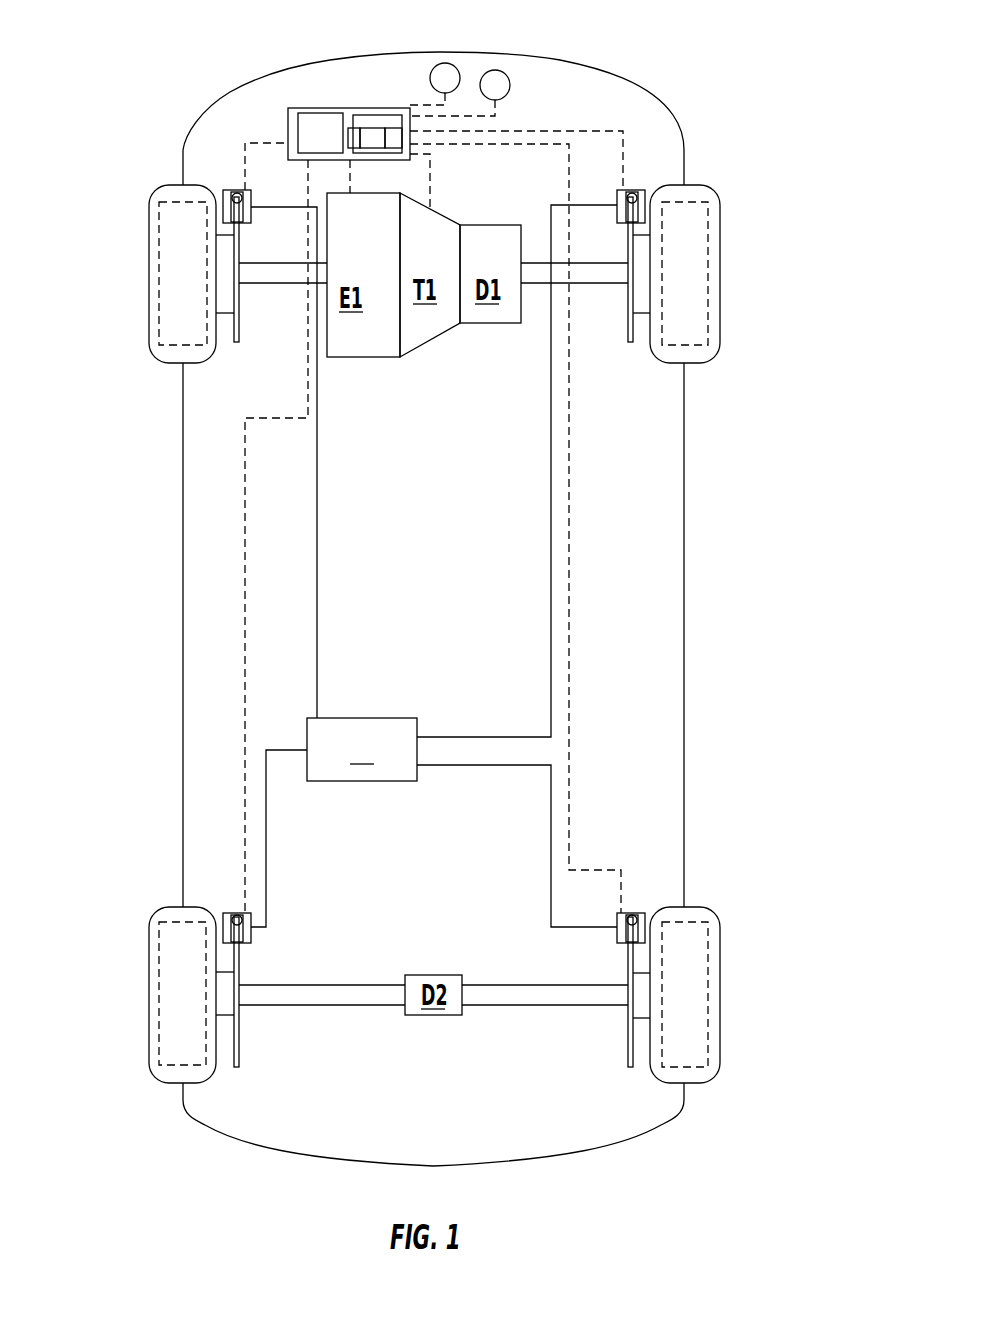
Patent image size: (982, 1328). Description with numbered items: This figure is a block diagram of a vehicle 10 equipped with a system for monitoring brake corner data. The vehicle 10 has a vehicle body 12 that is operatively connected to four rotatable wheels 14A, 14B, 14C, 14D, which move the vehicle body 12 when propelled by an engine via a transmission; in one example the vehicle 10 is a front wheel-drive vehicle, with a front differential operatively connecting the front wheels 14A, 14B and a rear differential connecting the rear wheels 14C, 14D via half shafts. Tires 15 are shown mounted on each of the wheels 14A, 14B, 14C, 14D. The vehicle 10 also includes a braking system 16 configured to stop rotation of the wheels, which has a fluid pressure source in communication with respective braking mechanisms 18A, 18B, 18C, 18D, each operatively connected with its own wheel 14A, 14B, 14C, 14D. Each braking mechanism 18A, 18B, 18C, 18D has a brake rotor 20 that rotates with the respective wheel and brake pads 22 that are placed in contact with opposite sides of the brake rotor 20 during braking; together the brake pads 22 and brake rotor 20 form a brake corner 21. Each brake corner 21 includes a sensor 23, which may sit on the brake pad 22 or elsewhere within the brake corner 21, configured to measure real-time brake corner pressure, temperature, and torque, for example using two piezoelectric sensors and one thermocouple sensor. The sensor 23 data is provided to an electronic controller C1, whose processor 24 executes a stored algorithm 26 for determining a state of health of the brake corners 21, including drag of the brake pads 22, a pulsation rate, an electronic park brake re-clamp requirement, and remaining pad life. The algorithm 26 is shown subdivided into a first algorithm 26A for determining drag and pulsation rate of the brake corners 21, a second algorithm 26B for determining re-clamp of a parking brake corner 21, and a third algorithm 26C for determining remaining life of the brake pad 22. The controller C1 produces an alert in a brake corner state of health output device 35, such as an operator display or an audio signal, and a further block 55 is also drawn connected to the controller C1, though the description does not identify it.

The vehicle 10 is at (173, 73).
The vehicle body 12 is at (677, 122).
The front wheel 14A is at (158, 235).
The front wheel 14B is at (713, 223).
The rear wheel 14C is at (158, 953).
The rear wheel 14D is at (713, 953).
The tire 15 is at (149, 298).
The braking system 16 is at (373, 713).
The braking mechanism 18A is at (227, 187).
The braking mechanism 18B is at (632, 188).
The braking mechanism 18C is at (275, 915).
The braking mechanism 18D is at (632, 911).
The brake rotor 20 is at (240, 323).
The brake corner 21 is at (258, 197).
The brake pad 22 is at (240, 222).
The sensor 23 is at (237, 193).
The processor 24 is at (288, 128).
The electronic controller C1 is at (348, 108).
The algorithm 26 is at (372, 114).
The first algorithm 26A is at (362, 128).
The second algorithm 26B is at (373, 148).
The third algorithm 26C is at (395, 130).
The brake corner state of health output device 35 is at (453, 65).
The sensor 55 is at (505, 72).